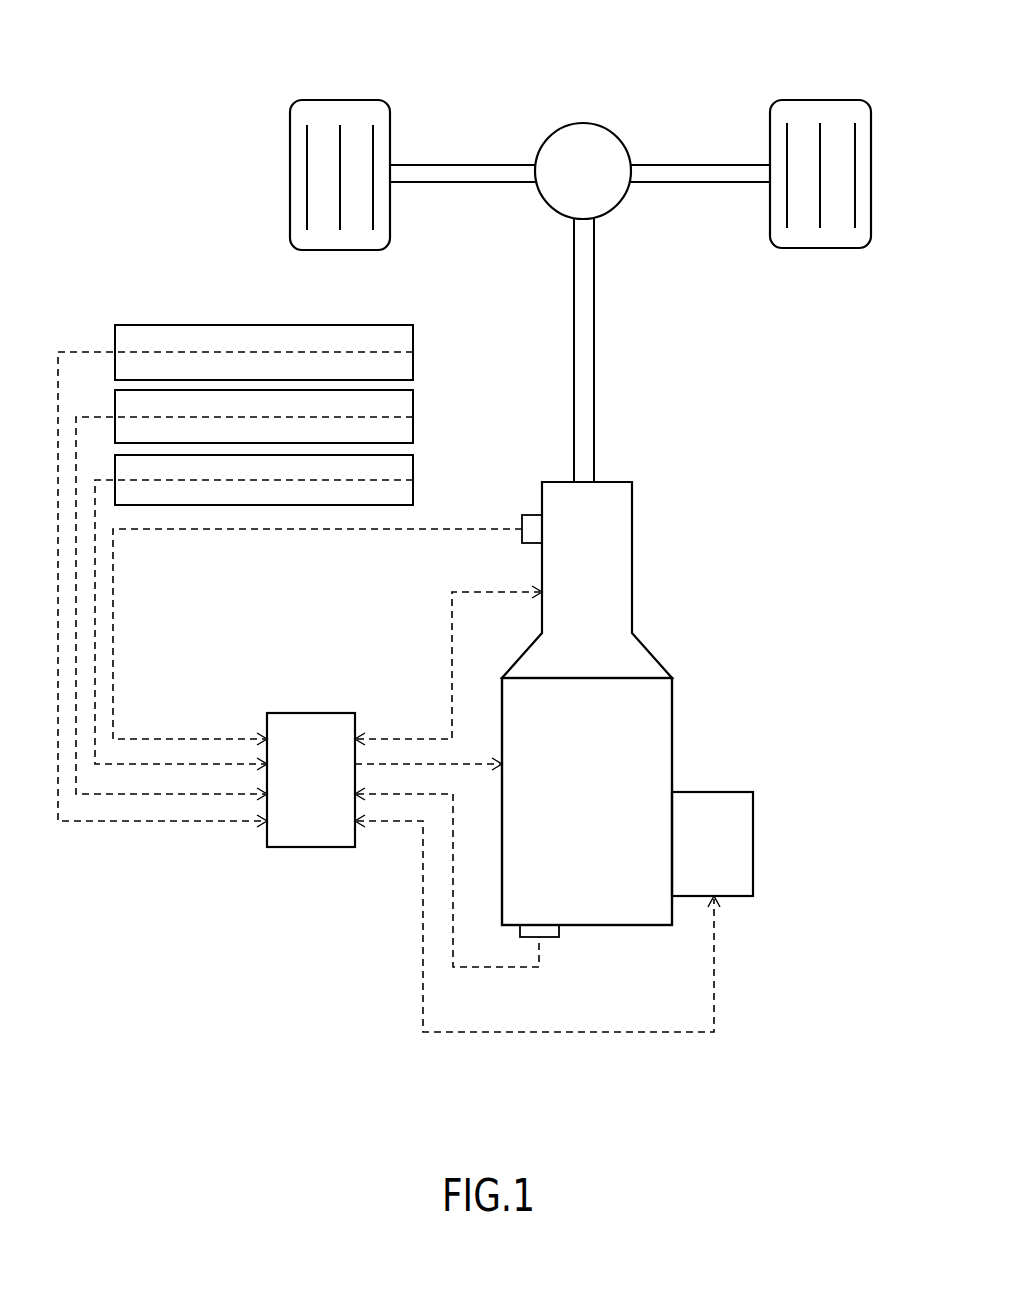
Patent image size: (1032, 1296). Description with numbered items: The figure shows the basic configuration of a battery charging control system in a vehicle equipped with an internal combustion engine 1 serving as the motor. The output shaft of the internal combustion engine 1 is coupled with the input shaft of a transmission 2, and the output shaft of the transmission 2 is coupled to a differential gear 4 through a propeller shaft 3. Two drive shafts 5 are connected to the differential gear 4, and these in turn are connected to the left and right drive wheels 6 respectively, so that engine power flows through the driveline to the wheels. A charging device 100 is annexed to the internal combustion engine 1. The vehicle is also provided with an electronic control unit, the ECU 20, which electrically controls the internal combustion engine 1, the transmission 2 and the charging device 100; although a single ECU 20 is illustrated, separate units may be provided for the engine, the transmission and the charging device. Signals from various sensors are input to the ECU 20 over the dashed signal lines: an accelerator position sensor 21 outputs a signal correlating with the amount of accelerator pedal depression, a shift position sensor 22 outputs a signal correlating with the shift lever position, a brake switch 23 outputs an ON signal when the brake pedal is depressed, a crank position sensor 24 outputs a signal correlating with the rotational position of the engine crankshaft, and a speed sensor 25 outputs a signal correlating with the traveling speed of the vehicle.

The internal combustion engine 1 is at (672, 718).
The transmission 2 is at (632, 557).
The propeller shaft 3 is at (594, 358).
The differential gear 4 is at (581, 128).
The drive shafts 5 is at (455, 170).
The drive wheels 6 is at (343, 105).
The electronic control unit (ECU) 20 is at (313, 848).
The accelerator position sensor 21 is at (413, 350).
The shift position sensor 22 is at (413, 413).
The brake switch 23 is at (413, 478).
The crank position sensor 24 is at (559, 937).
The speed sensor 25 is at (532, 517).
The charging device 100 is at (753, 841).